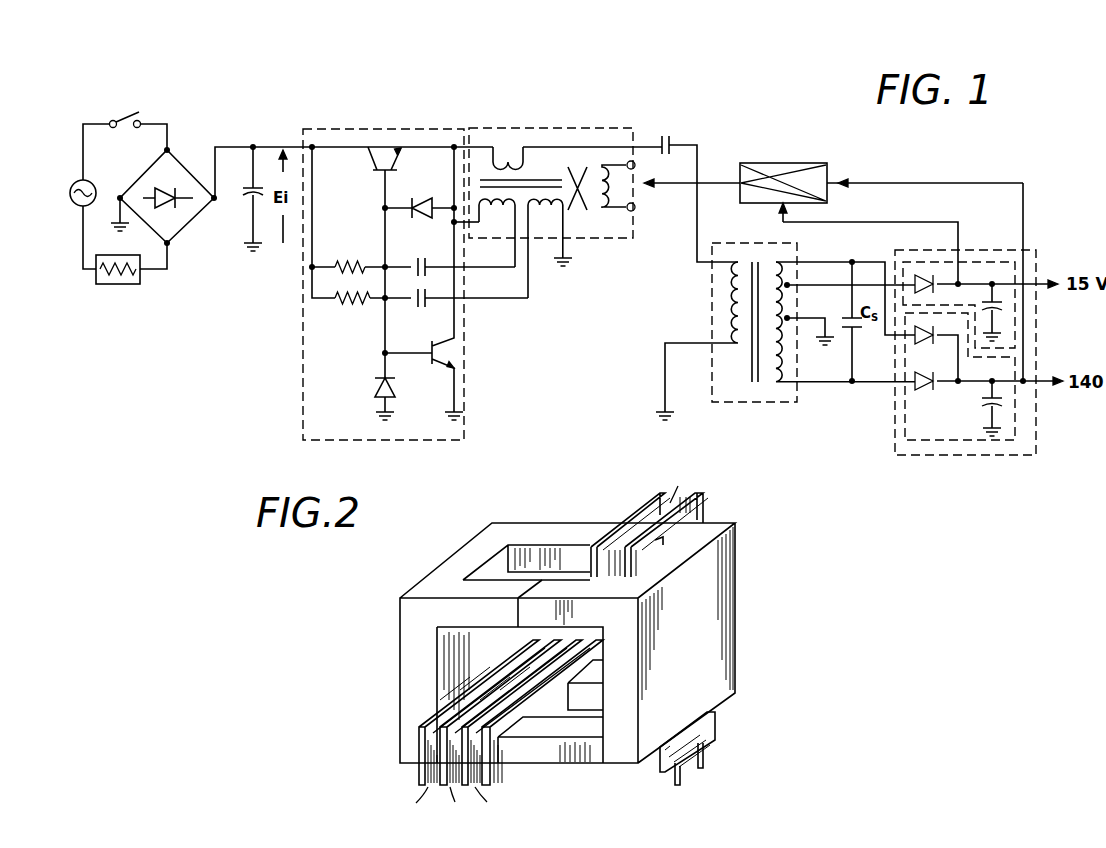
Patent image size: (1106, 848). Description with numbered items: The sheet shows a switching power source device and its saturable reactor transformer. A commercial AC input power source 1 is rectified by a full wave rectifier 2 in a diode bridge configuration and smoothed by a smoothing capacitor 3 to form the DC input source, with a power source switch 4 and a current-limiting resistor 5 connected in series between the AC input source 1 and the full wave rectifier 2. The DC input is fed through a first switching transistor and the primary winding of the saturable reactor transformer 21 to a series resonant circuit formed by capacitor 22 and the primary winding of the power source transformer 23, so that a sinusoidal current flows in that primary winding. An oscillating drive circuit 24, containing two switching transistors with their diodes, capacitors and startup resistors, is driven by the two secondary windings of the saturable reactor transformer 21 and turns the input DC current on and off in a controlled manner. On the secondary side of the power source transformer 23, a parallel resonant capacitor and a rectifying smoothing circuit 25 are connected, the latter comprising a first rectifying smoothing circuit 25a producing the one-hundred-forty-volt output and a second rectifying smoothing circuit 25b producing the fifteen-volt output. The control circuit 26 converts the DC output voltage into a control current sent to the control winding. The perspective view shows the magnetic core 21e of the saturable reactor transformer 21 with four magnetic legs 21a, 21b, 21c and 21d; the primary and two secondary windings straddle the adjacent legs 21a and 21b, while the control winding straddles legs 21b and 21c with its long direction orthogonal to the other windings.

In FIG. 1, the AC input power source 1 is at (68, 186).
In FIG. 1, the full wave rectifier 2 is at (185, 166).
In FIG. 1, the smoothing capacitor 3 is at (245, 195).
In FIG. 1, the power source switch 4 is at (121, 114).
In FIG. 1, the resistor 5 is at (126, 285).
In FIG. 1, the saturable reactor transformer 21 is at (571, 127).
In FIG. 2, the saturable reactor transformer 21 is at (752, 543).
In FIG. 1, the capacitor 22 is at (676, 136).
In FIG. 1, the power source transformer 23 is at (752, 403).
In FIG. 1, the oscillating drive circuit 24 is at (353, 128).
In FIG. 1, the rectifying smoothing circuit 25 is at (913, 458).
In FIG. 1, the first rectifying smoothing circuit 25a is at (978, 445).
In FIG. 1, the second rectifying smoothing circuit 25b is at (975, 262).
In FIG. 1, the control circuit 26 is at (790, 163).
In FIG. 2, the magnetic leg 21a is at (551, 760).
In FIG. 2, the magnetic leg 21b is at (593, 702).
In FIG. 2, the magnetic leg 21c is at (573, 536).
In FIG. 2, the magnetic leg 21d is at (475, 591).
In FIG. 2, the magnetic core 21e is at (740, 603).